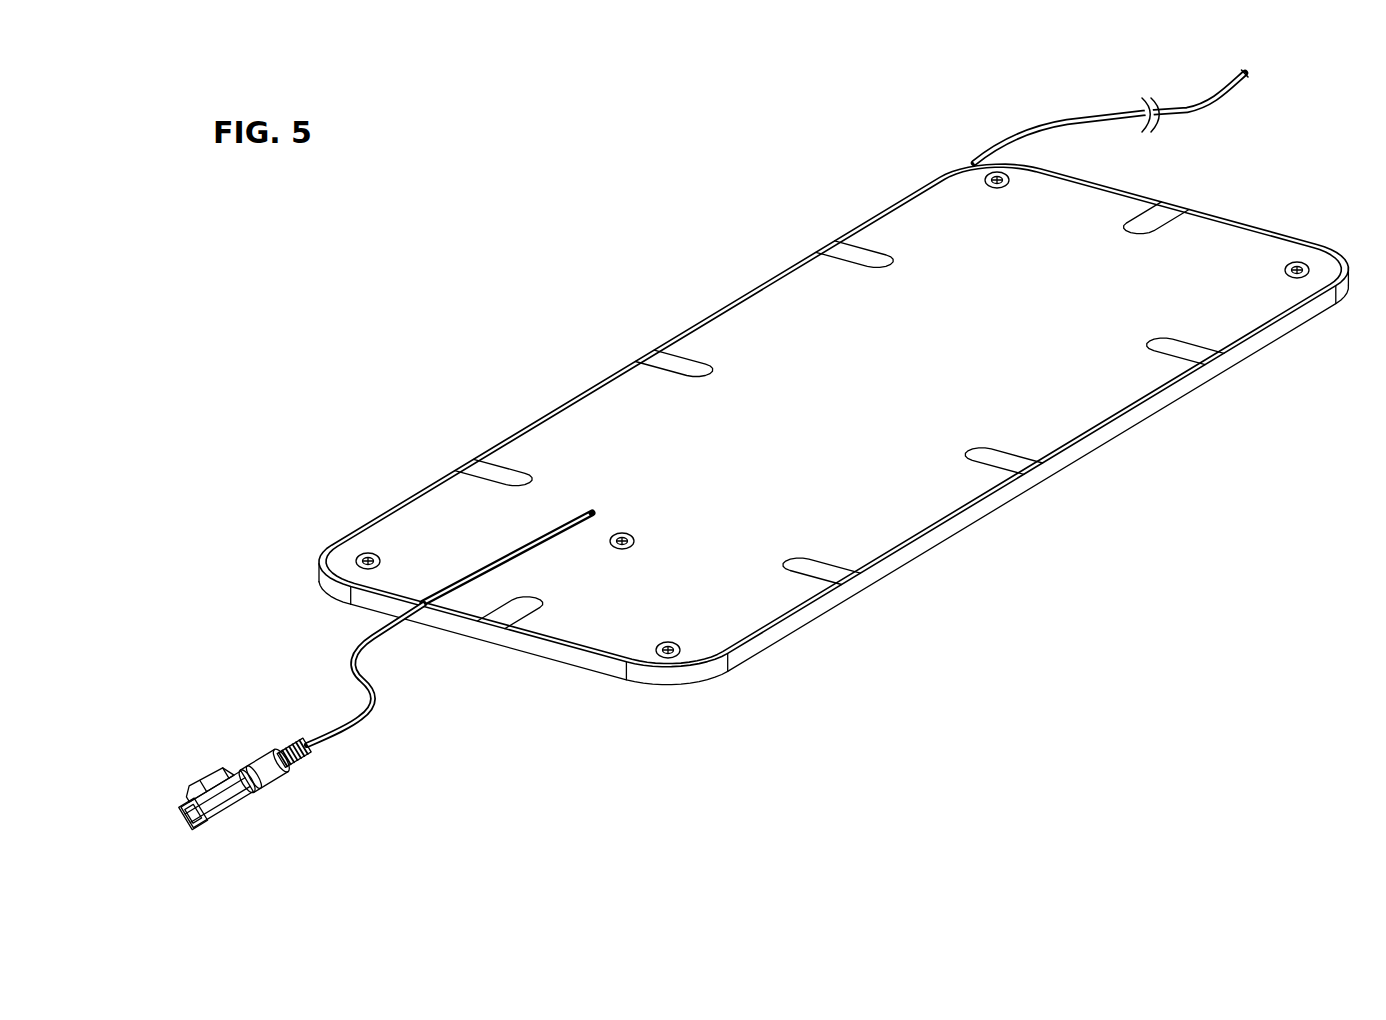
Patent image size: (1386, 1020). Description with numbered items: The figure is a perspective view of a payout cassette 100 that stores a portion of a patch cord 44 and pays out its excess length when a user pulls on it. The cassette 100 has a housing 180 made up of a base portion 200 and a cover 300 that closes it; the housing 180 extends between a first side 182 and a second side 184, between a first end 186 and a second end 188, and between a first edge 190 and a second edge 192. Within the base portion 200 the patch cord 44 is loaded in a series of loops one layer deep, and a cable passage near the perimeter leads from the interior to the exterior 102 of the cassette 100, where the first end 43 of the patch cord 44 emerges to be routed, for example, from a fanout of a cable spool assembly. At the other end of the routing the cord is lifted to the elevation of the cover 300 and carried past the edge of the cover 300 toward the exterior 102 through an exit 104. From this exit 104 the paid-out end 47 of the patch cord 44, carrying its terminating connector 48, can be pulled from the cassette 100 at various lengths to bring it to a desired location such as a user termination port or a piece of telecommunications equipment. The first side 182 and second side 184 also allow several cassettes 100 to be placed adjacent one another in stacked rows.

The cassette 100 is at (462, 248).
The exterior 102 is at (668, 680).
The exit 104 is at (425, 612).
The housing 180 is at (493, 437).
The first side 182 is at (802, 295).
The second side 184 is at (1000, 507).
The first end 186 is at (580, 663).
The second end 188 is at (1142, 193).
The first edge 190 is at (897, 560).
The second edge 192 is at (688, 322).
The base portion 200 is at (1083, 467).
The cover 300 is at (1213, 237).
The first end 43 is at (1248, 78).
The patch cord 44 is at (1070, 122).
The paid-out end 47 is at (353, 710).
The terminating connector 48 is at (192, 782).